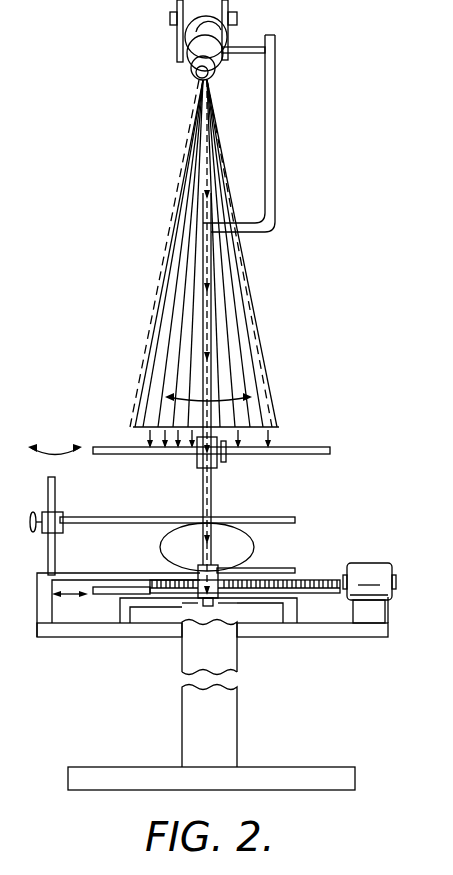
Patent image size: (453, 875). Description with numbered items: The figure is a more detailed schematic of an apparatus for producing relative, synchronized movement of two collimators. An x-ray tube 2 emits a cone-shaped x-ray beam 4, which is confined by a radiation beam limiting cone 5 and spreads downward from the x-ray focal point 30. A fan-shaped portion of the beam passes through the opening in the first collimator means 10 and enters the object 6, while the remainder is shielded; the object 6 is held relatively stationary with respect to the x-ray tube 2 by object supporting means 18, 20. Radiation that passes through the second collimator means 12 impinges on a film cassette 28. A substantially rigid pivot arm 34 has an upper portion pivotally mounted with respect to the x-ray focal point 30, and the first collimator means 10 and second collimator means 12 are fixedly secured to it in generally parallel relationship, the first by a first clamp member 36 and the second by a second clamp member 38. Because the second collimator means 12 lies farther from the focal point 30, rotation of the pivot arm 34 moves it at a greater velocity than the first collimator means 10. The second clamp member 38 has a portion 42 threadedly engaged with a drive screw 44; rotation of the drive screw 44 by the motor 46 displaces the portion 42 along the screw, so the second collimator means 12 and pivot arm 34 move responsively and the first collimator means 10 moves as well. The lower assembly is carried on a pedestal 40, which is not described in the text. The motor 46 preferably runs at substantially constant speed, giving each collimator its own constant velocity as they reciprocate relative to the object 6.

The x-ray focal point 30 is at (175, 55).
The x-ray tube 2 is at (176, 65).
The pivot arm 34 is at (278, 152).
The x-ray beam 4 is at (157, 285).
The radiation beam limiting cone 5 is at (255, 293).
The first clamp member 36 is at (208, 445).
The first collimator means 10 is at (328, 447).
The object supporting means 18 is at (115, 517).
The object 6 is at (178, 546).
The object supporting means 20 is at (83, 573).
The second collimator means 12 is at (95, 595).
The portion of second clamp member 42 is at (168, 600).
The second clamp member 38 is at (232, 600).
The film cassette 28 is at (273, 603).
The drive screw 44 is at (308, 580).
The motor 46 is at (362, 565).
The pedestal 40 is at (182, 727).